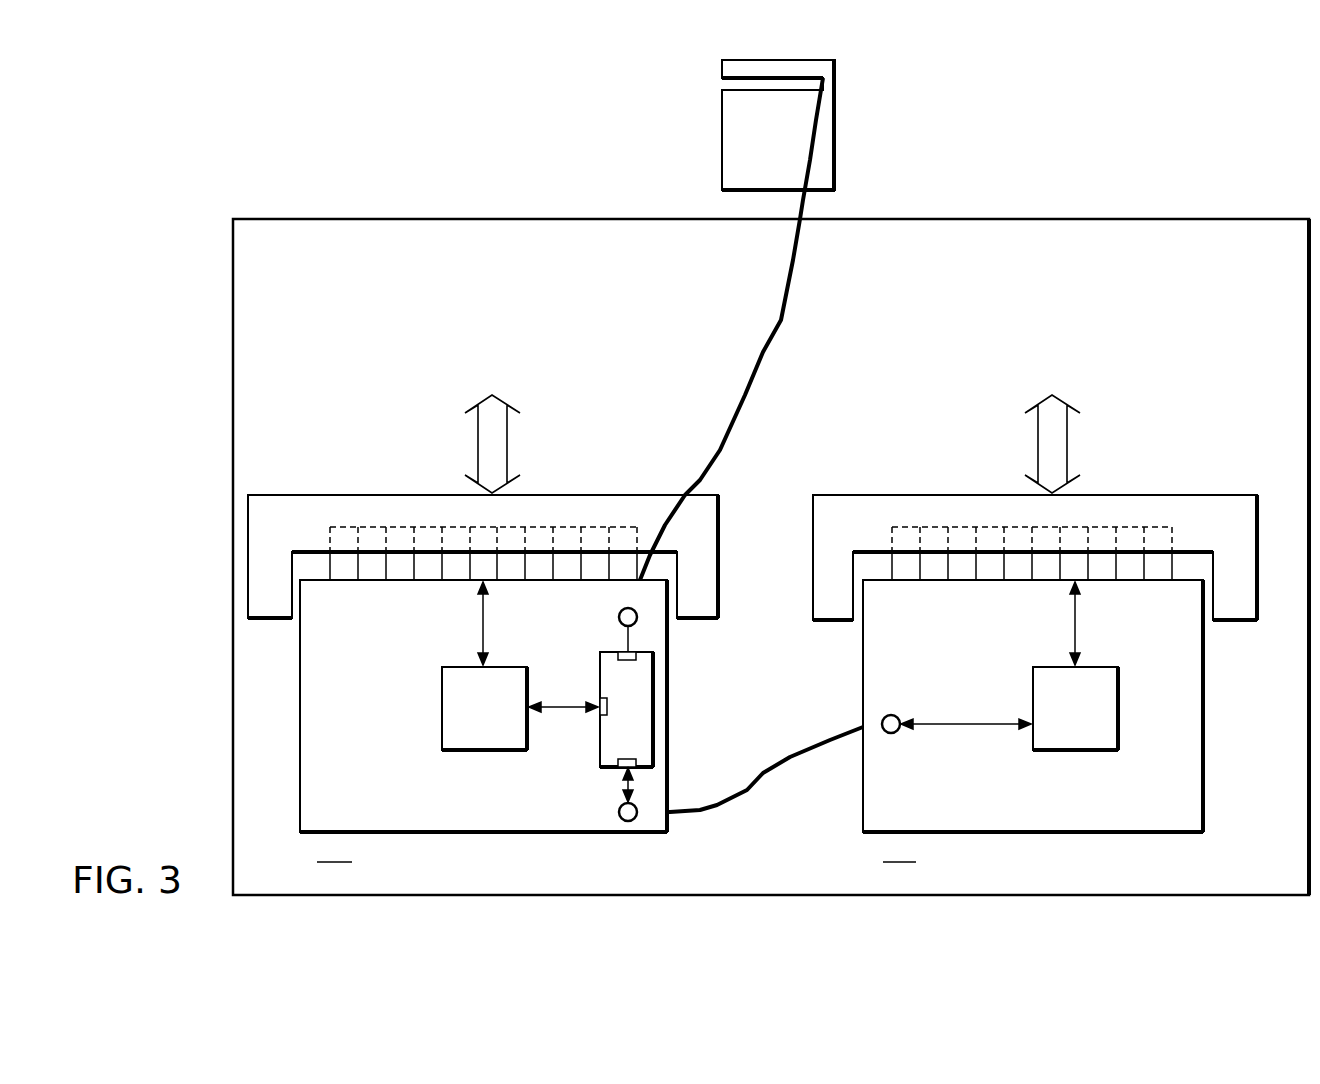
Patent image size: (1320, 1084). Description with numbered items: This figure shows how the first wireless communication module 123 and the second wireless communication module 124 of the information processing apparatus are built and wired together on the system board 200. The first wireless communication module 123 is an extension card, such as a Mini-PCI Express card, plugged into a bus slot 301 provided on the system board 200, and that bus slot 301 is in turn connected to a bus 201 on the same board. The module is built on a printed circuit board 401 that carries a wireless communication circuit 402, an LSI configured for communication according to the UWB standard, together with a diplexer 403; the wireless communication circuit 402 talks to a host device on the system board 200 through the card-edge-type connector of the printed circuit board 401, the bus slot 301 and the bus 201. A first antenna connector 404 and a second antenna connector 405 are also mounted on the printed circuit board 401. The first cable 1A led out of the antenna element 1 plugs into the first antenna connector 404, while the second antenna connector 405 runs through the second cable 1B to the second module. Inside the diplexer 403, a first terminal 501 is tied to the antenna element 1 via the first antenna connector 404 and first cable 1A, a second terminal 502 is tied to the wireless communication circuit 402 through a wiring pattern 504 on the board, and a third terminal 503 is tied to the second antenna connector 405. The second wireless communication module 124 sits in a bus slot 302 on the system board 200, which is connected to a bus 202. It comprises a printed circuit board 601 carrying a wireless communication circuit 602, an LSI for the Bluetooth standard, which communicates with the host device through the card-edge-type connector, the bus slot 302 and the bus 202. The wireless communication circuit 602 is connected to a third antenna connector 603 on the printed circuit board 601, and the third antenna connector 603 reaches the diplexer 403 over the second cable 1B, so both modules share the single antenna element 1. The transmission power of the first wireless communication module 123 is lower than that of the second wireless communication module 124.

The antenna element 1 is at (836, 140).
The first cable 1A is at (762, 352).
The second cable 1B is at (756, 787).
The system board 200 is at (1169, 219).
The bus 201 is at (507, 448).
The bus 202 is at (1068, 448).
The bus slot 301 is at (337, 495).
The bus slot 302 is at (1213, 495).
The printed circuit board 401 is at (462, 721).
The wireless communication circuit 402 is at (441, 733).
The diplexer 403 is at (599, 761).
The first antenna connector 404 is at (618, 617).
The second antenna connector 405 is at (628, 822).
The first terminal 501 is at (655, 656).
The second terminal 502 is at (603, 698).
The third terminal 503 is at (616, 768).
The wiring pattern 504 is at (561, 712).
The printed circuit board 601 is at (1066, 721).
The wireless communication circuit 602 is at (1075, 753).
The third antenna connector 603 is at (891, 733).
The first wireless communication module 123 is at (334, 850).
The second wireless communication module 124 is at (899, 850).